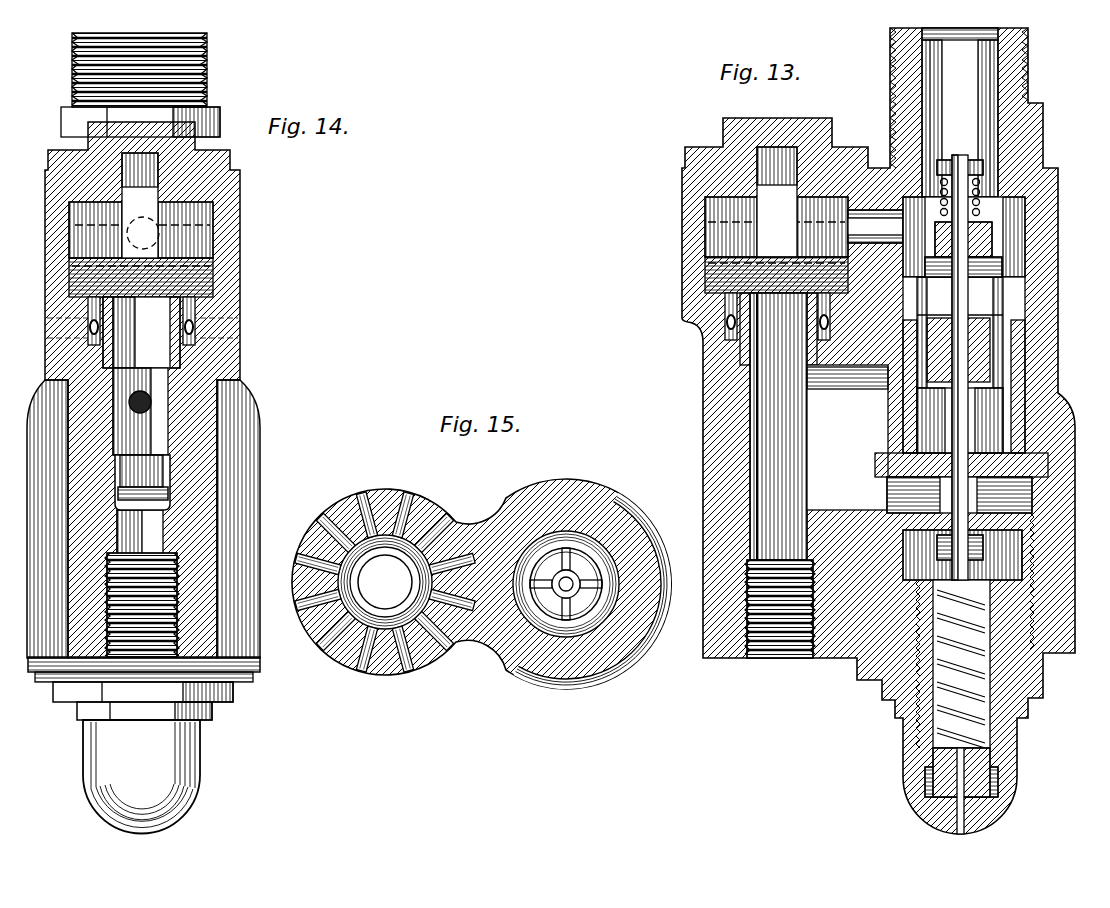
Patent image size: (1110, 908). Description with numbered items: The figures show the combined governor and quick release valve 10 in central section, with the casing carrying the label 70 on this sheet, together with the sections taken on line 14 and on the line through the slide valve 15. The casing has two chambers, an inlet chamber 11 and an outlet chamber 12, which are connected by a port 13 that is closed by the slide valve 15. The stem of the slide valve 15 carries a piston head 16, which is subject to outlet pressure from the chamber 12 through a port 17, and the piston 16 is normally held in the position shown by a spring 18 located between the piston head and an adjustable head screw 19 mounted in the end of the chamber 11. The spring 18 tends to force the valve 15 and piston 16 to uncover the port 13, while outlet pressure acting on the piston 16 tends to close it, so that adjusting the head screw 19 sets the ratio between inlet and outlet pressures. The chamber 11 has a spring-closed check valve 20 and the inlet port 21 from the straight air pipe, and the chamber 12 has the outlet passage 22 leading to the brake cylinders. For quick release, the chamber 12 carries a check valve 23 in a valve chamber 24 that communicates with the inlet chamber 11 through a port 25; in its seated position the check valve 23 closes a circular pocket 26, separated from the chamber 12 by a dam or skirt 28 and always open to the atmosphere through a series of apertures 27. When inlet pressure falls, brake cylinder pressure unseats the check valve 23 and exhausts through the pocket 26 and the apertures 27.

In FIG. 14, the combined governor and quick release valve 10 is at (240, 432).
In FIG. 15, the combined governor and quick release valve 10 is at (500, 528).
In FIG. 13, the body casing 70 is at (690, 193).
In FIG. 15, the inlet chamber 11 is at (590, 630).
In FIG. 13, the inlet chamber 11 is at (995, 411).
In FIG. 14, the outlet chamber 12 is at (150, 537).
In FIG. 15, the outlet chamber 12 is at (343, 644).
In FIG. 13, the outlet chamber 12 is at (770, 446).
In FIG. 14, the port 13 is at (151, 400).
In FIG. 13, the port 13 is at (910, 403).
In FIG. 13, the section line 14 is at (776, 140).
In FIG. 15, the slide valve 15 is at (546, 614).
In FIG. 13, the slide valve 15 is at (935, 326).
In FIG. 13, the piston head 16 is at (1012, 549).
In FIG. 14, the port 17 is at (162, 496).
In FIG. 13, the port 17 is at (882, 491).
In FIG. 13, the spring 18 is at (915, 726).
In FIG. 13, the adjustable head screw 19 is at (920, 779).
In FIG. 13, the check valve 20 is at (1000, 275).
In FIG. 14, the inlet port 21 is at (205, 38).
In FIG. 13, the inlet port 21 is at (959, 112).
In FIG. 14, the outlet passage 22 is at (232, 697).
In FIG. 13, the outlet passage 22 is at (766, 660).
In FIG. 14, the check valve 23 is at (213, 275).
In FIG. 13, the check valve 23 is at (700, 268).
In FIG. 14, the valve chamber 24 is at (213, 218).
In FIG. 13, the valve chamber 24 is at (722, 223).
In FIG. 14, the port 25 is at (160, 234).
In FIG. 13, the port 25 is at (863, 237).
In FIG. 14, the circular pocket 26 is at (195, 308).
In FIG. 15, the circular pocket 26 is at (392, 628).
In FIG. 13, the circular pocket 26 is at (726, 306).
In FIG. 14, the apertures 27 is at (193, 330).
In FIG. 15, the apertures 27 is at (412, 490).
In FIG. 13, the apertures 27 is at (730, 340).
In FIG. 14, the dam or skirt 28 is at (178, 357).
In FIG. 15, the dam or skirt 28 is at (385, 582).
In FIG. 13, the dam or skirt 28 is at (737, 362).